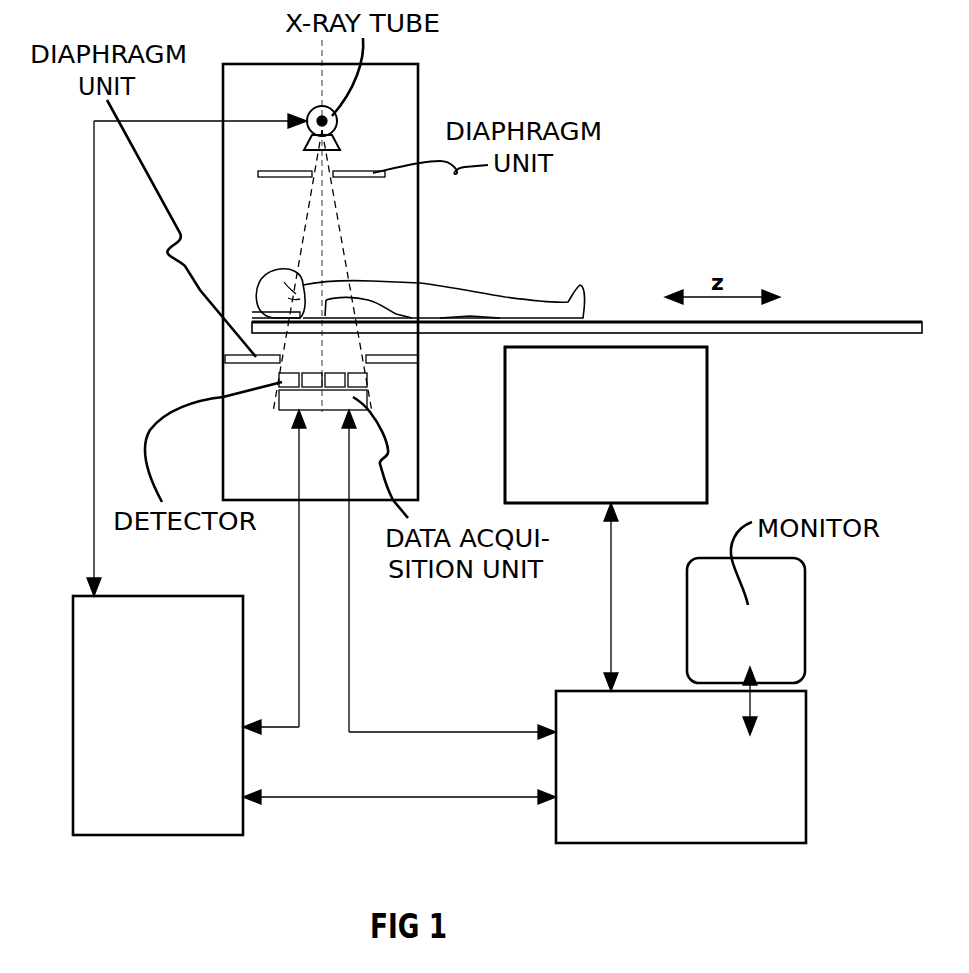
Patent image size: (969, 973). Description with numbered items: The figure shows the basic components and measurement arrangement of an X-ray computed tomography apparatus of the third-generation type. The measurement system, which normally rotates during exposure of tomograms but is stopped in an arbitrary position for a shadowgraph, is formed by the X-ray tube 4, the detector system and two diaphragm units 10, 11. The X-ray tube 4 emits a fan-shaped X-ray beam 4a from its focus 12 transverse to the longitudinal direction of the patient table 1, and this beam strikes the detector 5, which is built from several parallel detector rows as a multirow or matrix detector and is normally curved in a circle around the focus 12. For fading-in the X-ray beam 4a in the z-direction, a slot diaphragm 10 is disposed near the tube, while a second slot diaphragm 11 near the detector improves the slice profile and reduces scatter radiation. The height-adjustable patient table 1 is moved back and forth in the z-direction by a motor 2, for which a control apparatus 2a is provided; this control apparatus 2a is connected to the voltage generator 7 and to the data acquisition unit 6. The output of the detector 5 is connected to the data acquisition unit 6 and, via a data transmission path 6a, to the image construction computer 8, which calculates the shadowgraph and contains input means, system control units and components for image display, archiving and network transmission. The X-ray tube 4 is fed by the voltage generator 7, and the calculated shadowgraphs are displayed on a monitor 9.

The patient table 1 is at (849, 322).
The motor 2 is at (707, 432).
The control apparatus 2a is at (606, 425).
The X-ray tube 4 is at (337, 117).
The X-ray beam 4a is at (342, 238).
The detector 5 is at (280, 383).
The data acquisition unit 6 is at (287, 397).
The data transmission path 6a is at (350, 644).
The voltage generator 7 is at (190, 596).
The image construction computer 8 is at (806, 755).
The monitor 9 is at (805, 592).
The slot diaphragm 10 is at (262, 174).
The second slot diaphragm 11 is at (237, 354).
The focus 12 is at (313, 105).